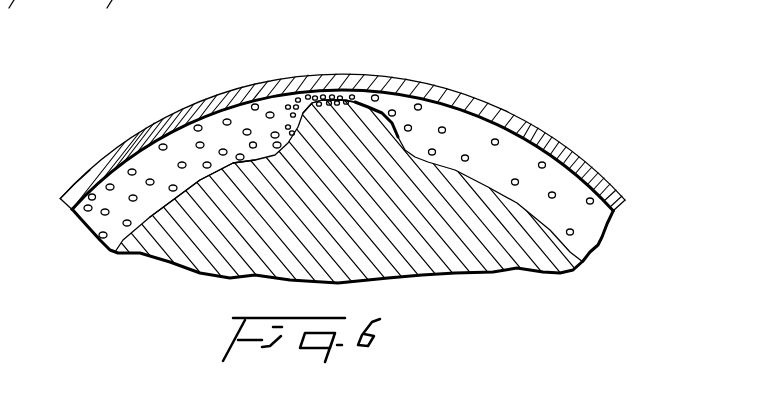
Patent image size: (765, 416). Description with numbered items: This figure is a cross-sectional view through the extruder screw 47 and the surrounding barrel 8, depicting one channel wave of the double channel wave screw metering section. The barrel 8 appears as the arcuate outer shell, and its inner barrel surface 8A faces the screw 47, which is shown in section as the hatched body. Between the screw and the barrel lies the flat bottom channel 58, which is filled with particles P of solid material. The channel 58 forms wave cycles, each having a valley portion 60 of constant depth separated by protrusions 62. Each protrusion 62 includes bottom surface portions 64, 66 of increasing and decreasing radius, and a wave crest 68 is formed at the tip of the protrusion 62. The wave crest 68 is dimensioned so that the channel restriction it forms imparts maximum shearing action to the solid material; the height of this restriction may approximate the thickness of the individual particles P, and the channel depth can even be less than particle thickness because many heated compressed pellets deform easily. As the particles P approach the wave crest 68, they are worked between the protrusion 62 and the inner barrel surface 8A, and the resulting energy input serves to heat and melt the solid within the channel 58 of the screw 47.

The barrel 8 is at (578, 155).
The inner barrel surface 8A is at (83, 193).
The extruder screw 47 is at (513, 255).
The flat bottom channel 58 is at (157, 176).
The valley portion 60 is at (200, 182).
The protrusion 62 is at (370, 115).
The bottom surface portion of increasing radius 64 is at (288, 100).
The bottom surface portion of decreasing radius 66 is at (397, 128).
The wave crest 68 is at (352, 100).
The particles P is at (228, 120).